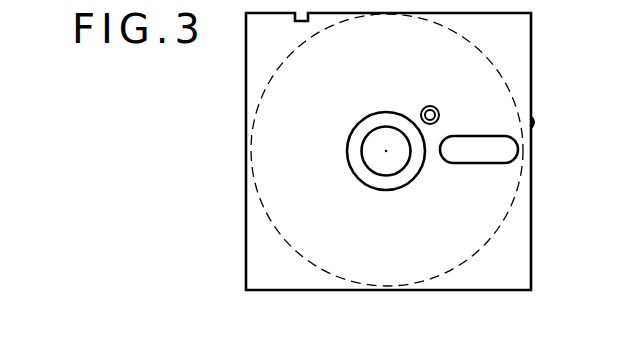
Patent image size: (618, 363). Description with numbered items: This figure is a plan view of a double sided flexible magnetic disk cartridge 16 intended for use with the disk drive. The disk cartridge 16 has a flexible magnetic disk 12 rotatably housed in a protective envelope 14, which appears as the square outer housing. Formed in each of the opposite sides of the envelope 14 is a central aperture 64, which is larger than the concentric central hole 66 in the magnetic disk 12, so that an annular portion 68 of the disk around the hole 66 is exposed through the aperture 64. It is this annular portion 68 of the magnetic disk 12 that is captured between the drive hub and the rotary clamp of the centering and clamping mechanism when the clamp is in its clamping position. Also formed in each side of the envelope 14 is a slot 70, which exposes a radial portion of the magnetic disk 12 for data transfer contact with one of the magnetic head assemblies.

The flexible magnetic disk 12 is at (505, 148).
The protective envelope 14 is at (530, 224).
The disk cartridge 16 is at (535, 79).
The central aperture 64 is at (406, 171).
The central hole 66 is at (370, 162).
The annular portion 68 is at (370, 129).
The slot 70 is at (457, 162).